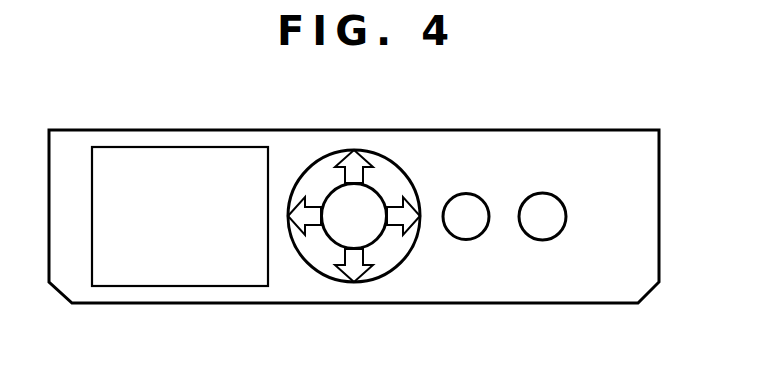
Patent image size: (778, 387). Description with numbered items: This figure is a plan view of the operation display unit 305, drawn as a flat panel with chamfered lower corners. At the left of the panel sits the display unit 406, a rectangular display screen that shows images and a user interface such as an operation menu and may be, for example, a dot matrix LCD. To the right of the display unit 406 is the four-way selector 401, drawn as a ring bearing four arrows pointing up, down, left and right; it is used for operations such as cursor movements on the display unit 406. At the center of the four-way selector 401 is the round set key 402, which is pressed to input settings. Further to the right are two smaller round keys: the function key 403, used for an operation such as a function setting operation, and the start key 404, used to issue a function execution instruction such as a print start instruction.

The operation display unit 305 is at (632, 130).
The 4-way selector 401 is at (328, 153).
The set key 402 is at (380, 238).
The function key 403 is at (453, 193).
The start key 404 is at (529, 193).
The display unit 406 is at (119, 150).